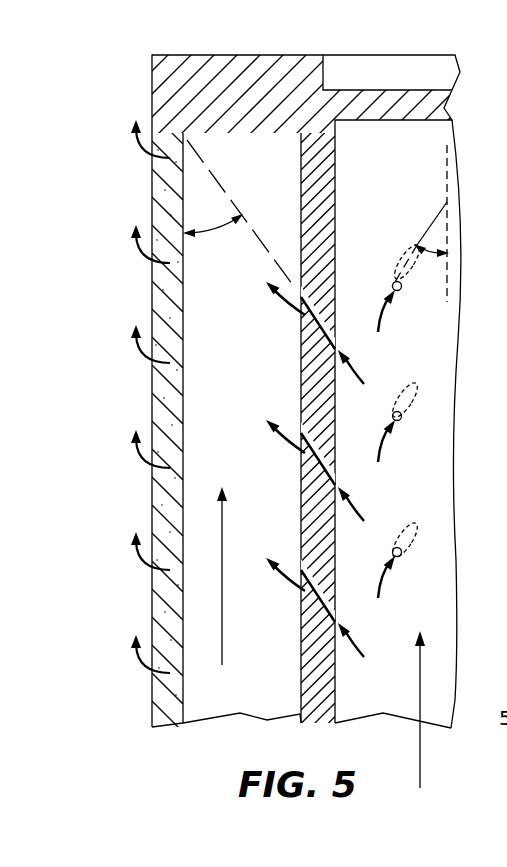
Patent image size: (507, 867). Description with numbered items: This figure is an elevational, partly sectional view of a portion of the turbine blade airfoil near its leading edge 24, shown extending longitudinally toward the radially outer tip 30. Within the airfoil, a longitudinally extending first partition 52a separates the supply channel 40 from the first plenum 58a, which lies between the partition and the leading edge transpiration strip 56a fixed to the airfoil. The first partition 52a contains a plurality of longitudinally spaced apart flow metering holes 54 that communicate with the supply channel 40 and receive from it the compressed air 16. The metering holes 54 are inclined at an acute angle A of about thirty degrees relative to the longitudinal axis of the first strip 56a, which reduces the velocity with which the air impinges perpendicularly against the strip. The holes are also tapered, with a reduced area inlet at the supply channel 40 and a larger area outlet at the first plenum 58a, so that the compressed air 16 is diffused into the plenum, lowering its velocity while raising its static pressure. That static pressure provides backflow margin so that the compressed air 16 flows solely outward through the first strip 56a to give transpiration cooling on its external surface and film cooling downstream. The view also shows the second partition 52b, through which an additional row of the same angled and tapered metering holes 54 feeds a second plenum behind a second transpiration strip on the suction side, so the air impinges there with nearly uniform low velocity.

The tip 30 is at (313, 54).
The leading edge 24 is at (152, 690).
The first plenum 58a is at (272, 701).
The supply channel 40 is at (377, 703).
The first partition 52a is at (297, 716).
The second partition 52b is at (457, 482).
The flow metering holes 54 is at (322, 449).
The first transpiration strip 56a is at (148, 514).
The compressed air 16 is at (420, 763).
The acute angle A is at (216, 235).